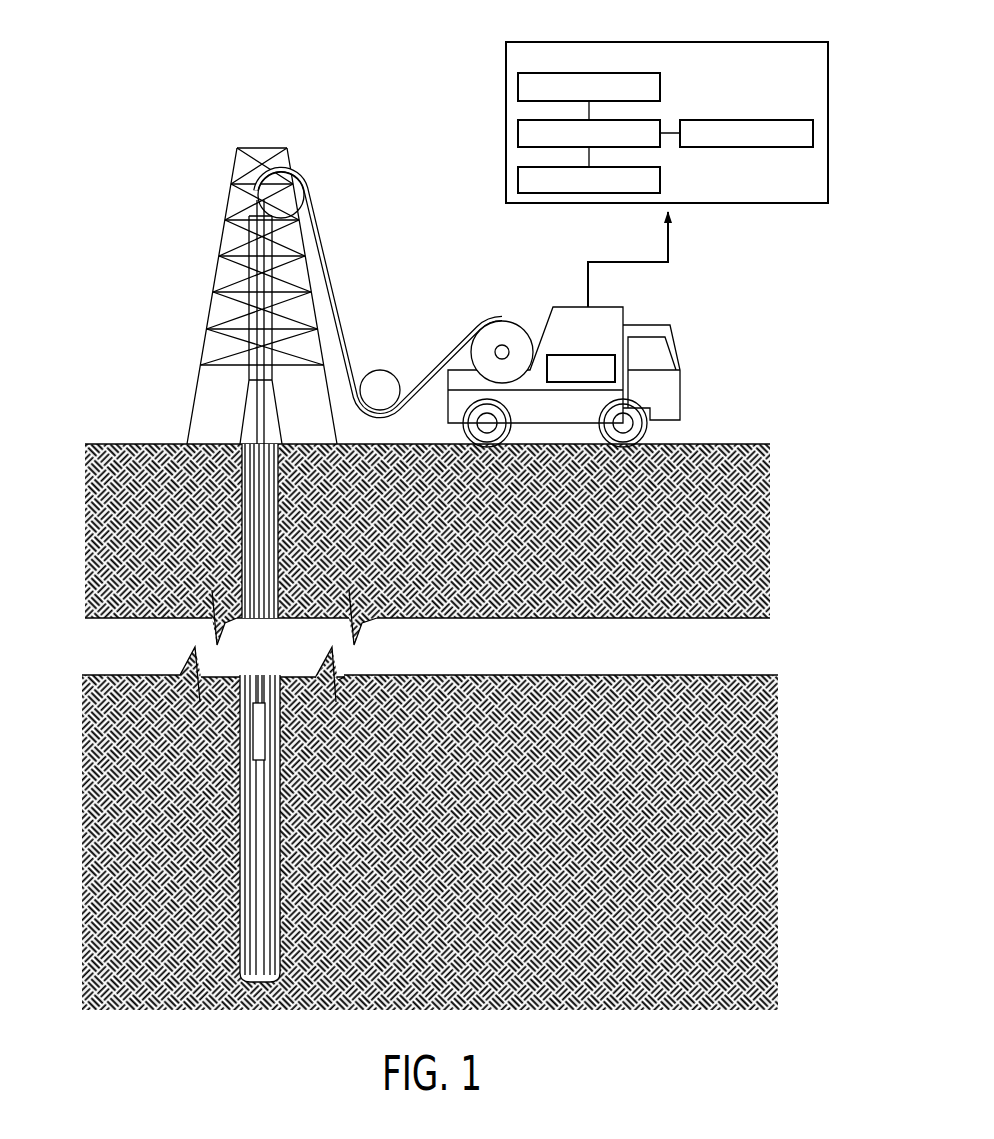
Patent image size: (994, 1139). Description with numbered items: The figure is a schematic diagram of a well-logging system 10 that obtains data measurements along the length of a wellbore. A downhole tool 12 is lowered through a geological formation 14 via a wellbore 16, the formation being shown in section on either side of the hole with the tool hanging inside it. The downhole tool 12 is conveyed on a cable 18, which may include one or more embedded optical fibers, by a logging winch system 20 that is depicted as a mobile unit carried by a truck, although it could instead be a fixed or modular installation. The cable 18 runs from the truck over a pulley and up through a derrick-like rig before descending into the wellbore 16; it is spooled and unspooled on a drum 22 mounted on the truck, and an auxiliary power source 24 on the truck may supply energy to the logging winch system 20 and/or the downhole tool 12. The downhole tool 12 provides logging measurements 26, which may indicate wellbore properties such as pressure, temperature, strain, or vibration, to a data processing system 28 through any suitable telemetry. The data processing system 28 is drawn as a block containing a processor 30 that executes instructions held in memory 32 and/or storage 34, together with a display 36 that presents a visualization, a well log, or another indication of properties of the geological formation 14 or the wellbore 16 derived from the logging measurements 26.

The well-logging system 10 is at (154, 200).
The downhole tool 12 is at (251, 712).
The geological formation 14 is at (100, 777).
The wellbore 16 is at (236, 496).
The cable 18 is at (347, 288).
The logging winch system 20 is at (557, 339).
The drum 22 is at (492, 323).
The auxiliary power source 24 is at (568, 354).
The logging measurements 26 is at (670, 243).
The data processing system 28 is at (645, 107).
The processor 30 is at (641, 118).
The memory 32 is at (518, 86).
The storage 34 is at (660, 183).
The display 36 is at (748, 120).